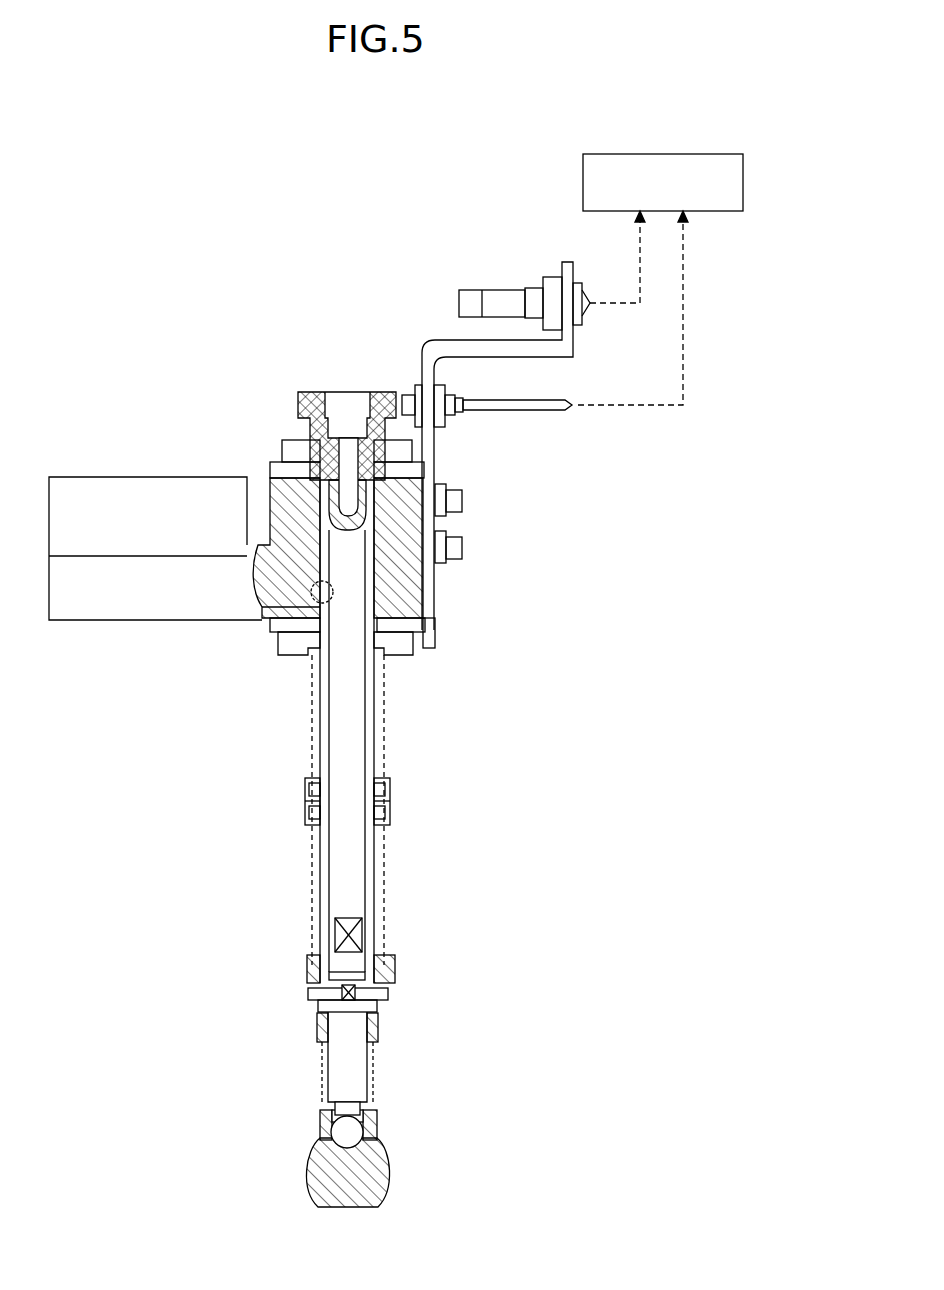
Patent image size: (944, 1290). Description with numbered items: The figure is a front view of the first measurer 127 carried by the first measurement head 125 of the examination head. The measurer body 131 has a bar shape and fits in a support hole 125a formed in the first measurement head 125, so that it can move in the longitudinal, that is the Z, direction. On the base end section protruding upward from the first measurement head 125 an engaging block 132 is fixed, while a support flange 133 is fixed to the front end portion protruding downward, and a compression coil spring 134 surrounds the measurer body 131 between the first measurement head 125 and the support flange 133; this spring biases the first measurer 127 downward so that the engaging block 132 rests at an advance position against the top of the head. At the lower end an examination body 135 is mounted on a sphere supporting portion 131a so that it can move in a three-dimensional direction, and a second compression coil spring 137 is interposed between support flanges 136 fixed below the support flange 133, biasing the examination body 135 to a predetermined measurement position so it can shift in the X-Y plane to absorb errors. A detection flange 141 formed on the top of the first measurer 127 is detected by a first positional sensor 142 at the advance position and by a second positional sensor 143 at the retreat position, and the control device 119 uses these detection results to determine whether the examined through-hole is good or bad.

The control device 119 is at (657, 152).
The second positional sensor 143 is at (497, 288).
The first positional sensor 142 is at (416, 385).
The detection flange 141 is at (308, 392).
The engaging block 132 is at (282, 447).
The first measurement head 125 is at (118, 620).
The support hole 125a is at (262, 605).
The measurer body 131 is at (340, 700).
The compression coil spring 134 is at (388, 710).
The first measurer 127 is at (427, 757).
The support flange 133 is at (307, 965).
The support flanges 136 is at (317, 1015).
The compression coil spring 137 is at (376, 1072).
The sphere supporting portion 131a is at (352, 1131).
The examination body 135 is at (378, 1175).